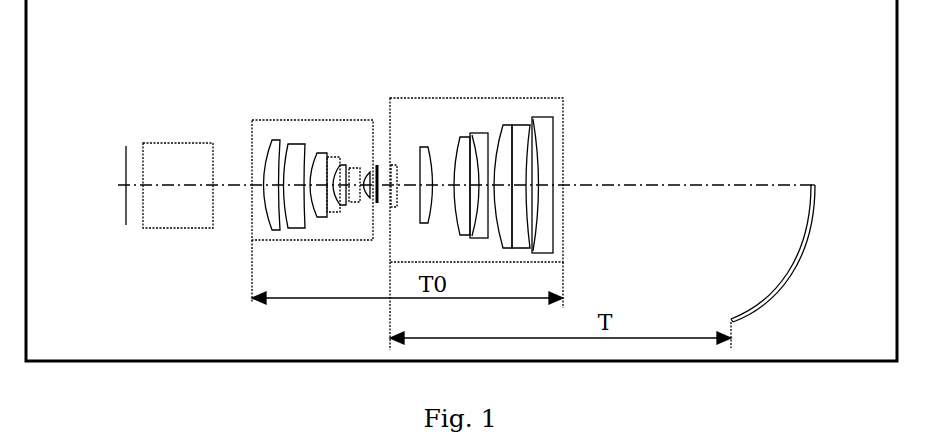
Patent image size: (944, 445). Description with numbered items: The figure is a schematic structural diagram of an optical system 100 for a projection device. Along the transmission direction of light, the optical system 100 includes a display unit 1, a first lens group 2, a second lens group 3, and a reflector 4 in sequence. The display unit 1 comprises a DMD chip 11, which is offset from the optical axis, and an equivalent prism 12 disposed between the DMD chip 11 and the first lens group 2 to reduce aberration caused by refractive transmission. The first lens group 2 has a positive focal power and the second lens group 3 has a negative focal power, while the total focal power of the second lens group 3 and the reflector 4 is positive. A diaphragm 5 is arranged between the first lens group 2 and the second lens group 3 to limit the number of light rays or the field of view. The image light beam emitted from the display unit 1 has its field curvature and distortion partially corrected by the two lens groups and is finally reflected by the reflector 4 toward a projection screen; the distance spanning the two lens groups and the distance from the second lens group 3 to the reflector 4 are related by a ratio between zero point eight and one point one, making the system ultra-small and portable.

The optical system 100 is at (425, 53).
The display unit 1 is at (162, 103).
The DMD chip 11 is at (124, 144).
The equivalent prism 12 is at (147, 143).
The first lens group 2 is at (275, 118).
The second lens group 3 is at (390, 98).
The reflector 4 is at (812, 183).
The diaphragm 5 is at (377, 206).